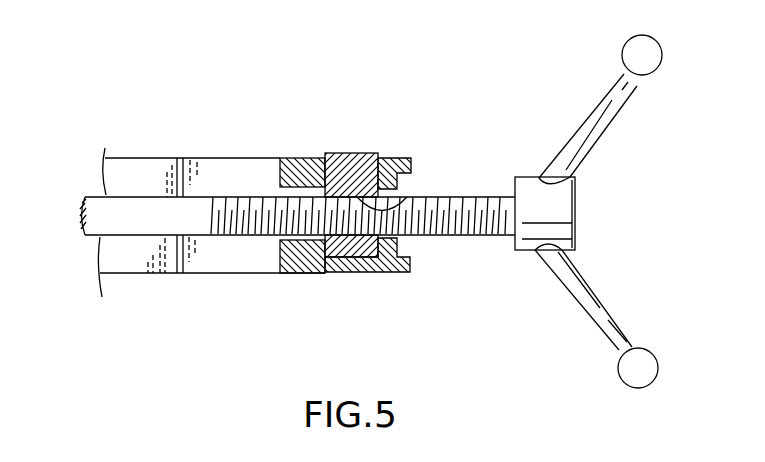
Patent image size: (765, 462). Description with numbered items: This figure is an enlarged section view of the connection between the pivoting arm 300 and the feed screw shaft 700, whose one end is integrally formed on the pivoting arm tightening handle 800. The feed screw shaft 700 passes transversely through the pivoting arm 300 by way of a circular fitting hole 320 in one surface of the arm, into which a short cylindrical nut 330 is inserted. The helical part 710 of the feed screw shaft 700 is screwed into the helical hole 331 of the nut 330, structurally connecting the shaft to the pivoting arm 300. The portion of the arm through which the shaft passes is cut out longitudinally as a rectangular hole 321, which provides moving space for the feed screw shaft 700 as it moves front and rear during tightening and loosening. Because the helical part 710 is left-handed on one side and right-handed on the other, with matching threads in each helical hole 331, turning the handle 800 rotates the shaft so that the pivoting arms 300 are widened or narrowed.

The pivoting arm 300 is at (138, 166).
The feed screw shaft 700 is at (132, 218).
The helical part 710 is at (233, 192).
The nut 330 is at (340, 153).
The fitting hole 320 is at (369, 161).
The helical hole 331 is at (400, 195).
The rectangular hole 321 is at (400, 238).
The pivoting arm tightening handle 800 is at (598, 135).